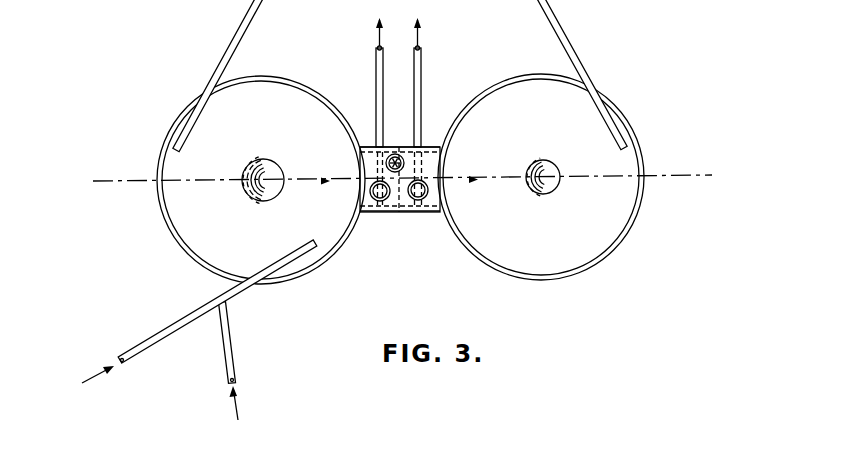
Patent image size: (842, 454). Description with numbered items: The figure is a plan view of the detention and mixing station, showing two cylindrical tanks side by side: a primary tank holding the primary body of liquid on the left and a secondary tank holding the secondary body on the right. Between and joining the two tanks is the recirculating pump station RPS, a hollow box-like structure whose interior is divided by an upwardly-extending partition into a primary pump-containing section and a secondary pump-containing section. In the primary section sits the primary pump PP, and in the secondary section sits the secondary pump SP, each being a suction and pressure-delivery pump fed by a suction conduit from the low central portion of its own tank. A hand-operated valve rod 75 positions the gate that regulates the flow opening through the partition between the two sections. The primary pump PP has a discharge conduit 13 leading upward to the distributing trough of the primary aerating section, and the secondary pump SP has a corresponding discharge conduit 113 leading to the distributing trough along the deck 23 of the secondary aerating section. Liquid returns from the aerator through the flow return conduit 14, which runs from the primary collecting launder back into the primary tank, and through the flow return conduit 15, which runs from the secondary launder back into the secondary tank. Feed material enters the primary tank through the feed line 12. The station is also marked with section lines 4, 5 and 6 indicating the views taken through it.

The section line 4- 4 is at (107, 184).
The section line 5- 5 is at (365, 176).
The section line 6- 6 is at (368, 213).
The feed line 12 is at (183, 320).
The pump flow delivery conduit 13 is at (376, 93).
The pump flow delivery conduit 113 is at (421, 95).
The flow return conduit 14 is at (229, 52).
The flow return conduit 15 is at (567, 43).
The deck 23 is at (233, 361).
The valve rod 75 is at (396, 153).
The primary pump PP is at (369, 191).
The secondary pump SP is at (429, 190).
The recirculating pump station RPS is at (398, 213).